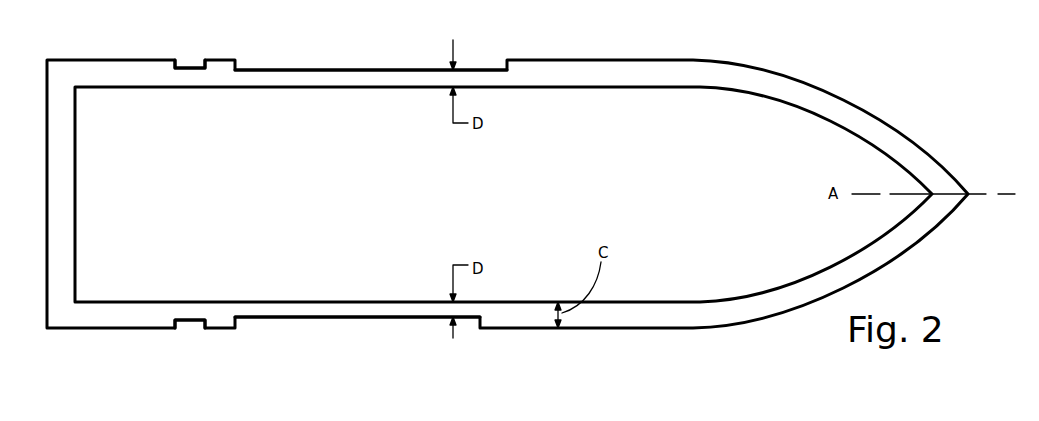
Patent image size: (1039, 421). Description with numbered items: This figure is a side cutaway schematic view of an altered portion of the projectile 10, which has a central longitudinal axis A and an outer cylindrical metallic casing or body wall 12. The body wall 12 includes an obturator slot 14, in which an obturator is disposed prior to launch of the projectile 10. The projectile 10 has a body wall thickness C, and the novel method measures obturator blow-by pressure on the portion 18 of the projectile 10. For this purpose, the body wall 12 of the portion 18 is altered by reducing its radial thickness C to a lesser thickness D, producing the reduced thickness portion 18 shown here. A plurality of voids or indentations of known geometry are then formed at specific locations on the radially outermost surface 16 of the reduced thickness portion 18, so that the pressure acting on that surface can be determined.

The projectile 10 is at (507, 193).
The body wall 12 is at (727, 72).
The obturator slot 14 is at (192, 58).
The radially outermost surface 16 is at (410, 70).
The reduced thickness portion 18 is at (235, 338).